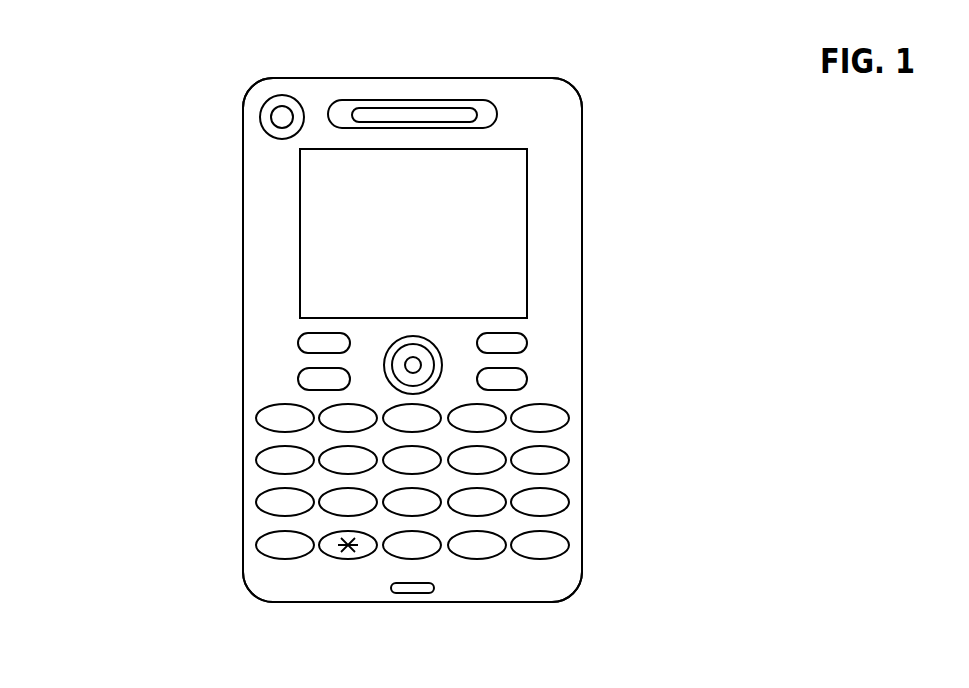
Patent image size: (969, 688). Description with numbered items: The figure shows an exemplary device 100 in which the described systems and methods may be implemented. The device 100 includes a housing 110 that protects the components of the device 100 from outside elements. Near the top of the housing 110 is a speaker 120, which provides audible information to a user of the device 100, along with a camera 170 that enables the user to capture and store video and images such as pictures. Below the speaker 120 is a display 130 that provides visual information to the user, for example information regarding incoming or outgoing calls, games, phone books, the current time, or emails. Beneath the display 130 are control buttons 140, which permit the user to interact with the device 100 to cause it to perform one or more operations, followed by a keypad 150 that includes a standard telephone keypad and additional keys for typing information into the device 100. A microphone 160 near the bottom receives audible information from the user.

The device 100 is at (120, 49).
The housing 110 is at (243, 338).
The speaker 120 is at (413, 100).
The display 130 is at (527, 233).
The control buttons 140 is at (540, 325).
The keypad 150 is at (555, 572).
The microphone 160 is at (413, 593).
The camera 170 is at (261, 113).